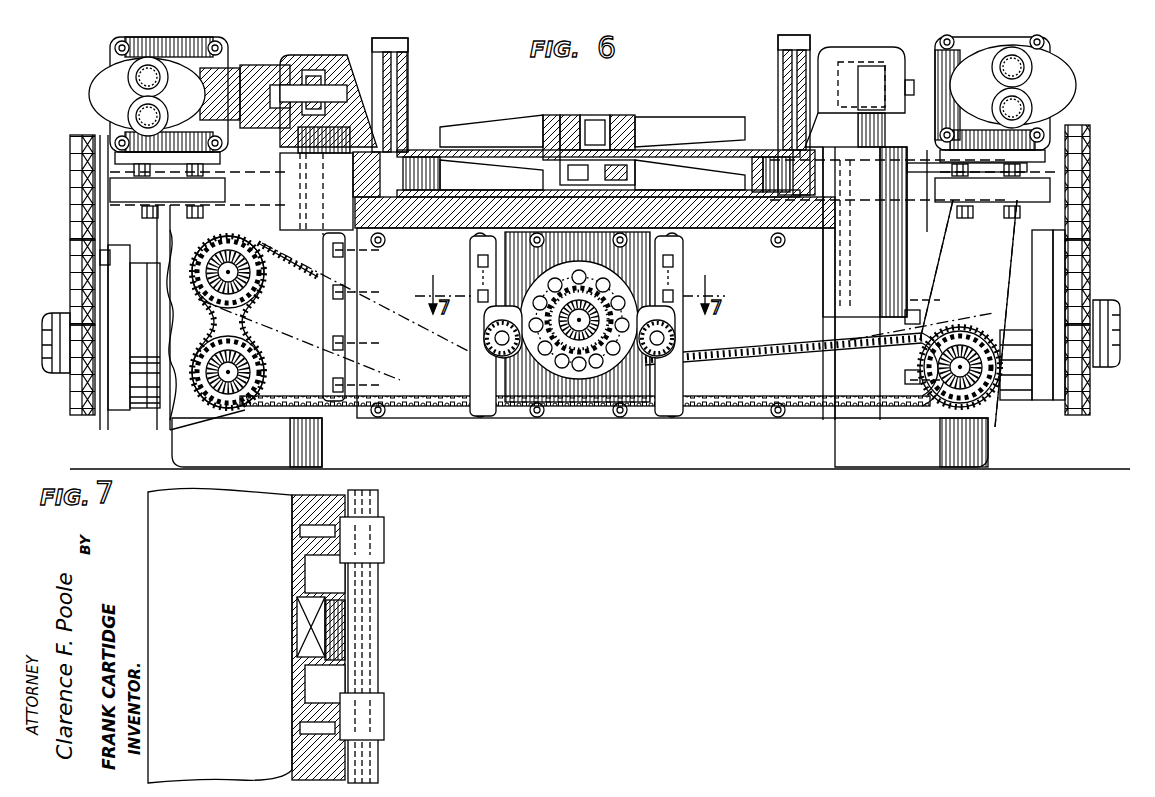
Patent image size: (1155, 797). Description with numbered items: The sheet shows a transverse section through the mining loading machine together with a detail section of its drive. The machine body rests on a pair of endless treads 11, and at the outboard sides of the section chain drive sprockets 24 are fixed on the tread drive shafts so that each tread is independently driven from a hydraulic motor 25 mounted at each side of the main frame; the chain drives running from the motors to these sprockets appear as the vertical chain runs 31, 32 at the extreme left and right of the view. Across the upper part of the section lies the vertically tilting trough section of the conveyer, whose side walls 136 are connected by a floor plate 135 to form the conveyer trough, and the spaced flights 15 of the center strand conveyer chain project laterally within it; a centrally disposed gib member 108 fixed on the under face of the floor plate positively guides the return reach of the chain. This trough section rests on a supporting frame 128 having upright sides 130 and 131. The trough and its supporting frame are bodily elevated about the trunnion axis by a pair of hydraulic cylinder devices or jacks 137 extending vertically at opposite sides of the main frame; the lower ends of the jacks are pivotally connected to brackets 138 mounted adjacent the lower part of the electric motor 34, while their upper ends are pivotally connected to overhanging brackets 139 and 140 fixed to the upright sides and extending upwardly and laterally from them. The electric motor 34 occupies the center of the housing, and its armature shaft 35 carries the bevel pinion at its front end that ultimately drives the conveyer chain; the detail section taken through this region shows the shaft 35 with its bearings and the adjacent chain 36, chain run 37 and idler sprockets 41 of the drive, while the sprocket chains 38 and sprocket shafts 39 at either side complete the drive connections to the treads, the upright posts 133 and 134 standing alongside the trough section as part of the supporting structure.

In FIG. 6, the endless tread 11 is at (172, 450).
In FIG. 6, the flight 15 is at (688, 128).
In FIG. 6, the chain drive sprocket 24 is at (70, 405).
In FIG. 6, the hydraulic motor 25 is at (108, 80).
In FIG. 6, the chain 31 is at (70, 165).
In FIG. 6, the chain section 32 is at (70, 250).
In FIG. 6, the electric motor 34 is at (545, 420).
In FIG. 7, the electric motor 34 is at (232, 702).
In FIG. 6, the armature shaft 35 is at (579, 365).
In FIG. 7, the armature shaft 35 is at (290, 640).
In FIG. 6, the cover plate / chain 36 is at (612, 378).
In FIG. 7, the cover plate / chain 36 is at (380, 642).
In FIG. 6, the drive chain 37 is at (730, 415).
In FIG. 6, the sprocket chain 38 is at (265, 285).
In FIG. 6, the sprocket shaft 39 is at (228, 375).
In FIG. 6, the idler sprocket 41 is at (487, 348).
In FIG. 7, the idler sprocket 41 is at (385, 545).
In FIG. 6, the gib member 108 is at (560, 170).
In FIG. 6, the supporting frame 128 is at (450, 230).
In FIG. 6, the upright side 130 is at (415, 150).
In FIG. 6, the upright side 131 is at (778, 152).
In FIG. 6, the post 133 is at (778, 62).
In FIG. 6, the lower wedge 134 is at (697, 172).
In FIG. 6, the floor plate 135 is at (497, 175).
In FIG. 6, the side wall 136 is at (410, 48).
In FIG. 6, the hydraulic cylinder device 137 is at (290, 192).
In FIG. 6, the bracket 138 is at (340, 440).
In FIG. 6, the overhanging bracket 139 is at (875, 48).
In FIG. 6, the overhanging bracket 140 is at (308, 55).